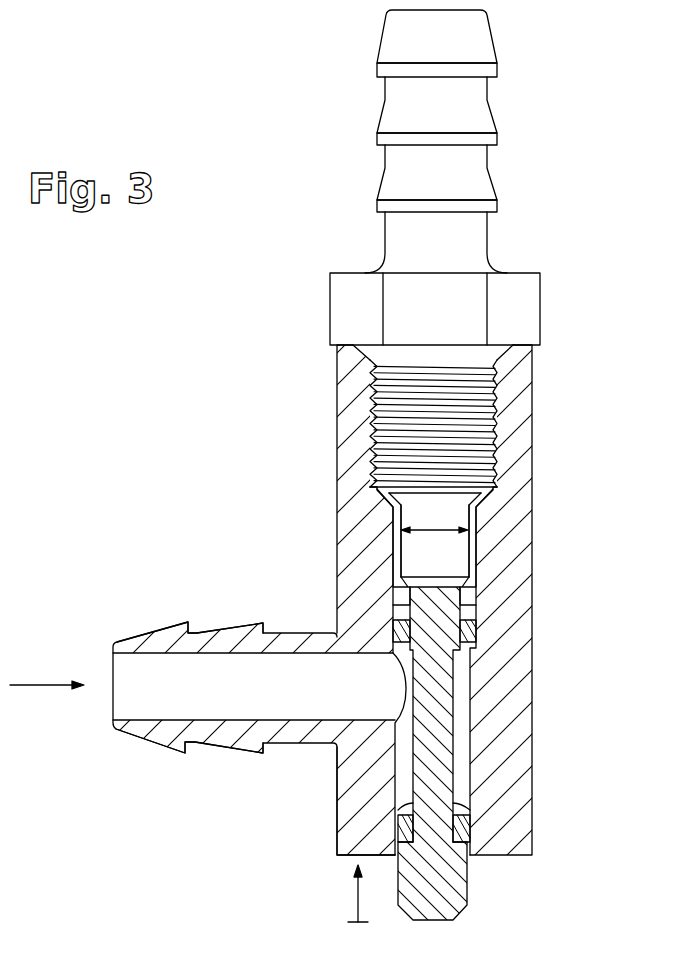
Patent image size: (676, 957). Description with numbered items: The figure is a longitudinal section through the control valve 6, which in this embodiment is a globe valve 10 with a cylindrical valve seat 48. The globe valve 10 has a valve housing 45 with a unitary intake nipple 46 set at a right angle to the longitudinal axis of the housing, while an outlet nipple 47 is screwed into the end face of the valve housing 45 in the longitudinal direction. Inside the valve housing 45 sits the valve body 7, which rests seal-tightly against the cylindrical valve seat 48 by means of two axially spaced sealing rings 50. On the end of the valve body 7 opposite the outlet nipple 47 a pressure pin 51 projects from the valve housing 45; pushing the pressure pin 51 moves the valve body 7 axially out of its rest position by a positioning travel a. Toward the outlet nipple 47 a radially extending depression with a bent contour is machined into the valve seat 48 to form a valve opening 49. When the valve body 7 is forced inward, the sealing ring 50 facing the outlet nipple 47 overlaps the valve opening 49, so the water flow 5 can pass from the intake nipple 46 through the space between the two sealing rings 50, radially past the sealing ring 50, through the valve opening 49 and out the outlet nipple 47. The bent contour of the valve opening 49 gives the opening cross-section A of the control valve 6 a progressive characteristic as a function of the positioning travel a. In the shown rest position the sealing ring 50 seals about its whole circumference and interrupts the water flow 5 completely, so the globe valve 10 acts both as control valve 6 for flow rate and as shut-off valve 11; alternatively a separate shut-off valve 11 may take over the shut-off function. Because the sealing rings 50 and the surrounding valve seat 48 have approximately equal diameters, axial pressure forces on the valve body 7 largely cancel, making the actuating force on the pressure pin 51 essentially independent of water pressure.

The water flow 5 is at (40, 685).
The control valve 6 is at (210, 402).
The valve body 7 is at (433, 720).
The globe valve 10 is at (507, 793).
The shut-off valve 11 is at (337, 505).
The valve housing 45 is at (367, 826).
The intake nipple 46 is at (207, 735).
The outlet nipple 47 is at (473, 187).
The valve seat 48 is at (393, 549).
The valve opening 49 is at (455, 545).
The sealing rings 50 is at (462, 632).
The pressure pin 51 is at (443, 897).
The opening cross-section A is at (440, 528).
The positioning travel a is at (352, 900).